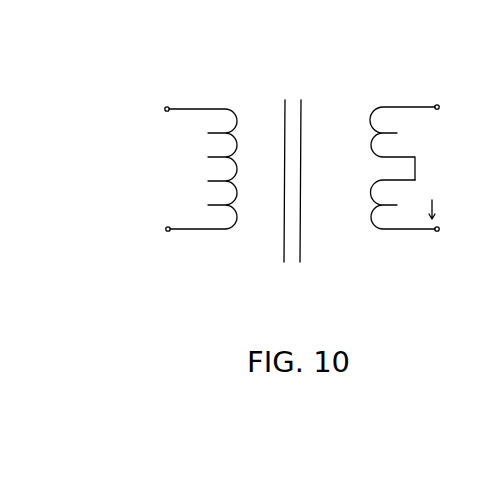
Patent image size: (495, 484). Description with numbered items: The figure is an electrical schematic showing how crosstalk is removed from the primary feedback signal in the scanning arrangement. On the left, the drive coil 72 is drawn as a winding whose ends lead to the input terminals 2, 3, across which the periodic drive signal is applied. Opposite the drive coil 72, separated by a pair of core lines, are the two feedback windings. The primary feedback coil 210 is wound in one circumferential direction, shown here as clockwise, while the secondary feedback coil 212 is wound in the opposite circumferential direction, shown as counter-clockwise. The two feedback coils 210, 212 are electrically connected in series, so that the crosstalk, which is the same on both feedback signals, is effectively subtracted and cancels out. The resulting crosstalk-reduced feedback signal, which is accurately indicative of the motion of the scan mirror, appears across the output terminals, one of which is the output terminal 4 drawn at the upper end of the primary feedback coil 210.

The input terminal 2 is at (160, 126).
The input terminal 3 is at (161, 245).
The output terminal 4 is at (439, 95).
The drive coil 72 is at (239, 121).
The primary feedback coil 210 is at (370, 140).
The secondary feedback coil 212 is at (360, 206).